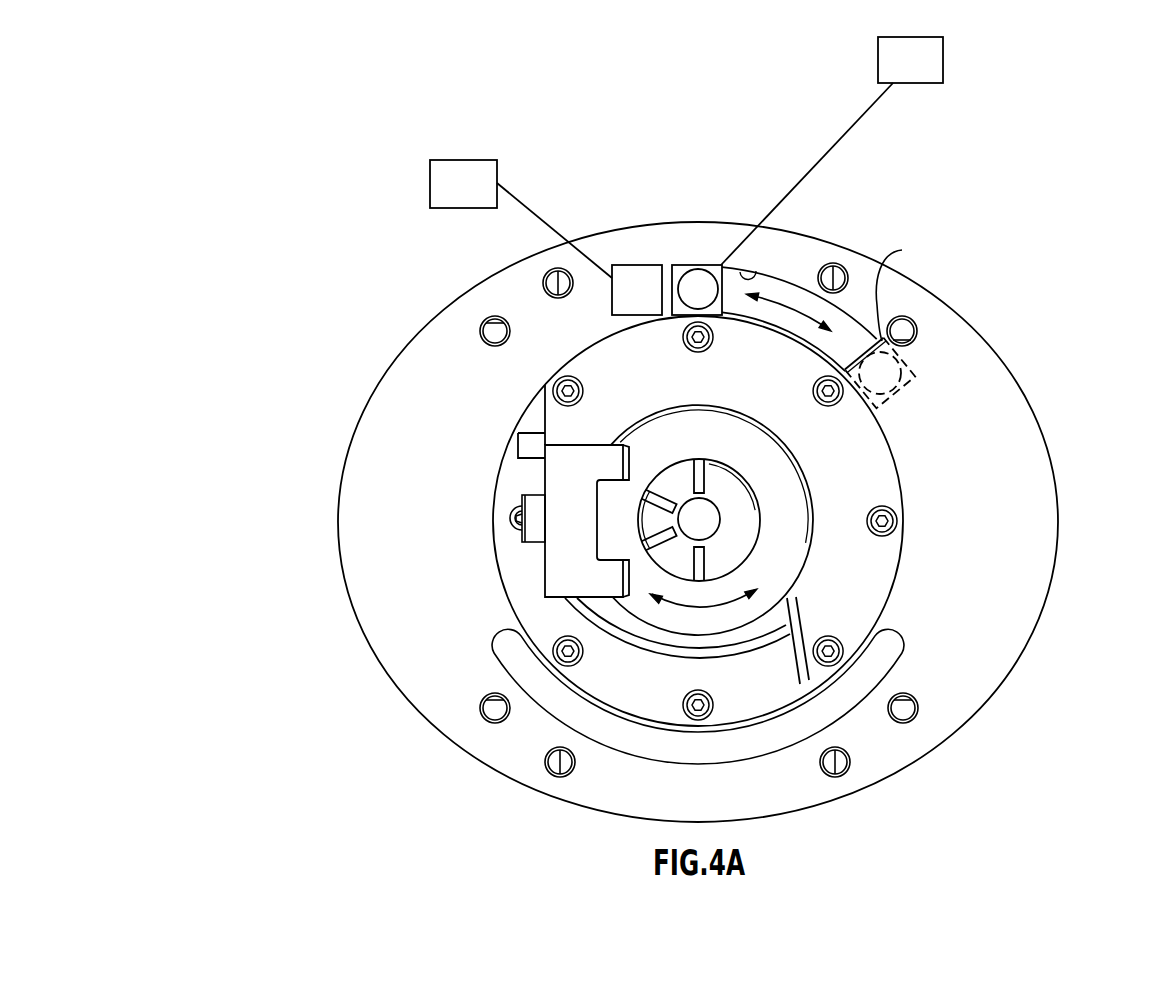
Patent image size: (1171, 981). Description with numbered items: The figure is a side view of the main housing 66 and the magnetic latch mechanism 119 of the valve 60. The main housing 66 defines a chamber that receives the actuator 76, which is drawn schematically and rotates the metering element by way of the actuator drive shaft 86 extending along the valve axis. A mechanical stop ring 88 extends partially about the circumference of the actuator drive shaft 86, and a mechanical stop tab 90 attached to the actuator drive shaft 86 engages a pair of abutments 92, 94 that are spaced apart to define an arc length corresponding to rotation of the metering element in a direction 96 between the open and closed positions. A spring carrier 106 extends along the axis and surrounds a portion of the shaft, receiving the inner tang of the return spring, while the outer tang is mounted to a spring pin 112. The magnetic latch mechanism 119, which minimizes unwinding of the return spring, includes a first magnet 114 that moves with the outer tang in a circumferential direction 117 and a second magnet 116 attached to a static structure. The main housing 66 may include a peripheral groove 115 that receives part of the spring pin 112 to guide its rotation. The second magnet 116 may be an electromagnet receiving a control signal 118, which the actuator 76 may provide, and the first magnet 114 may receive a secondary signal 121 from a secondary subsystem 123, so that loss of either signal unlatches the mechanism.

The valve 60 is at (298, 212).
The main housing 66 is at (346, 567).
The actuator 76 is at (458, 160).
The actuator drive shaft 86 is at (785, 510).
The mechanical stop ring 88 is at (611, 385).
The mechanical stop tab 90 is at (582, 465).
The abutment 92 is at (527, 444).
The abutment 94 is at (563, 597).
The direction 96 is at (697, 607).
The spring carrier 106 is at (740, 540).
The spring pin 112 is at (699, 282).
The first magnet 114 is at (681, 262).
The peripheral groove 115 is at (760, 265).
The second magnet 116 is at (630, 262).
The circumferential direction 117 is at (792, 300).
The control signal 118 is at (528, 208).
The magnetic latch mechanism 119 is at (647, 146).
The secondary signal 121 is at (852, 130).
The secondary subsystem 123 is at (945, 55).